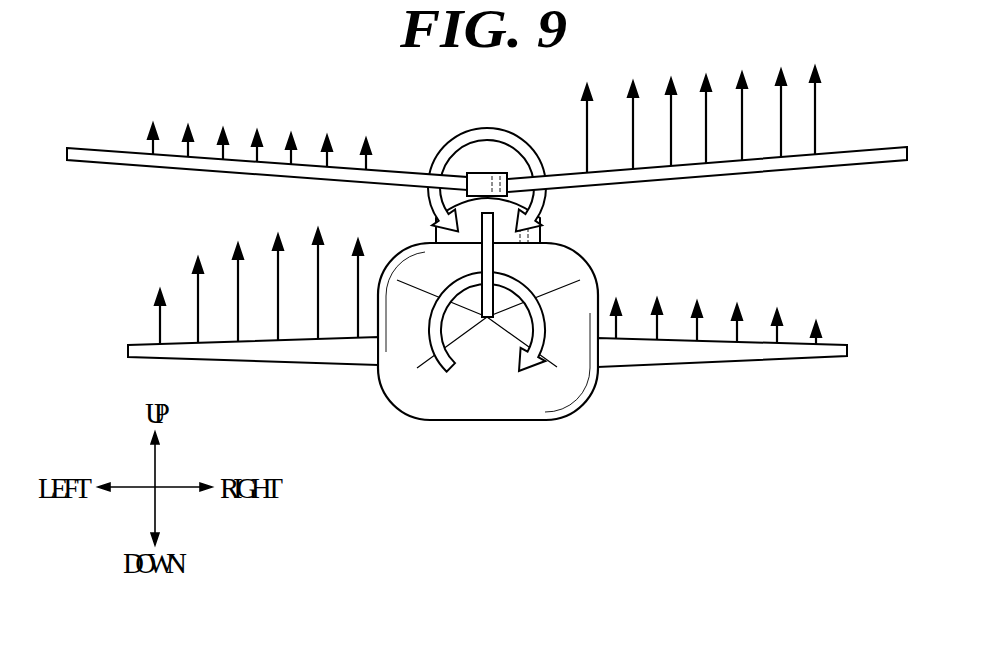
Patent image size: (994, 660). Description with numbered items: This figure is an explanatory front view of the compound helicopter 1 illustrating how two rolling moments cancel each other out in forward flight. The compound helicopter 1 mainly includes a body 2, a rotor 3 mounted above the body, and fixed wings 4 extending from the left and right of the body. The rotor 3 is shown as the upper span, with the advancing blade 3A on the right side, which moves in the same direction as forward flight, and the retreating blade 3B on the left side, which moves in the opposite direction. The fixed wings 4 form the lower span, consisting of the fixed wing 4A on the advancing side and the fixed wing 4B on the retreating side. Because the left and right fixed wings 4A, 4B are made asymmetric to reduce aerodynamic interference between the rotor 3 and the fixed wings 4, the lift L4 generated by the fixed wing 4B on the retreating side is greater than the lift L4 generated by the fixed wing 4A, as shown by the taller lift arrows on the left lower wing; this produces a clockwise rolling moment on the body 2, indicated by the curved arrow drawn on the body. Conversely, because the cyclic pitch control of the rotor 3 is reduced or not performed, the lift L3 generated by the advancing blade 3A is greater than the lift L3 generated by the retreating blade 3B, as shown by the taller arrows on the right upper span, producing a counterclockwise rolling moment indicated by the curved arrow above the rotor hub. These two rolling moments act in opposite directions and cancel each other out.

The compound helicopter 1 is at (437, 125).
The body 2 is at (445, 410).
The rotor 3 is at (875, 148).
The advancing blade 3A is at (762, 172).
The retreating blade 3B is at (185, 165).
The fixed wings 4 is at (825, 358).
The fixed wing on the advancing side 4A is at (703, 358).
The fixed wing on the retreating side 4B is at (287, 357).
The lift generated by the rotor L3 is at (484, 120).
The lift generated by the fixed wings L4 is at (488, 287).